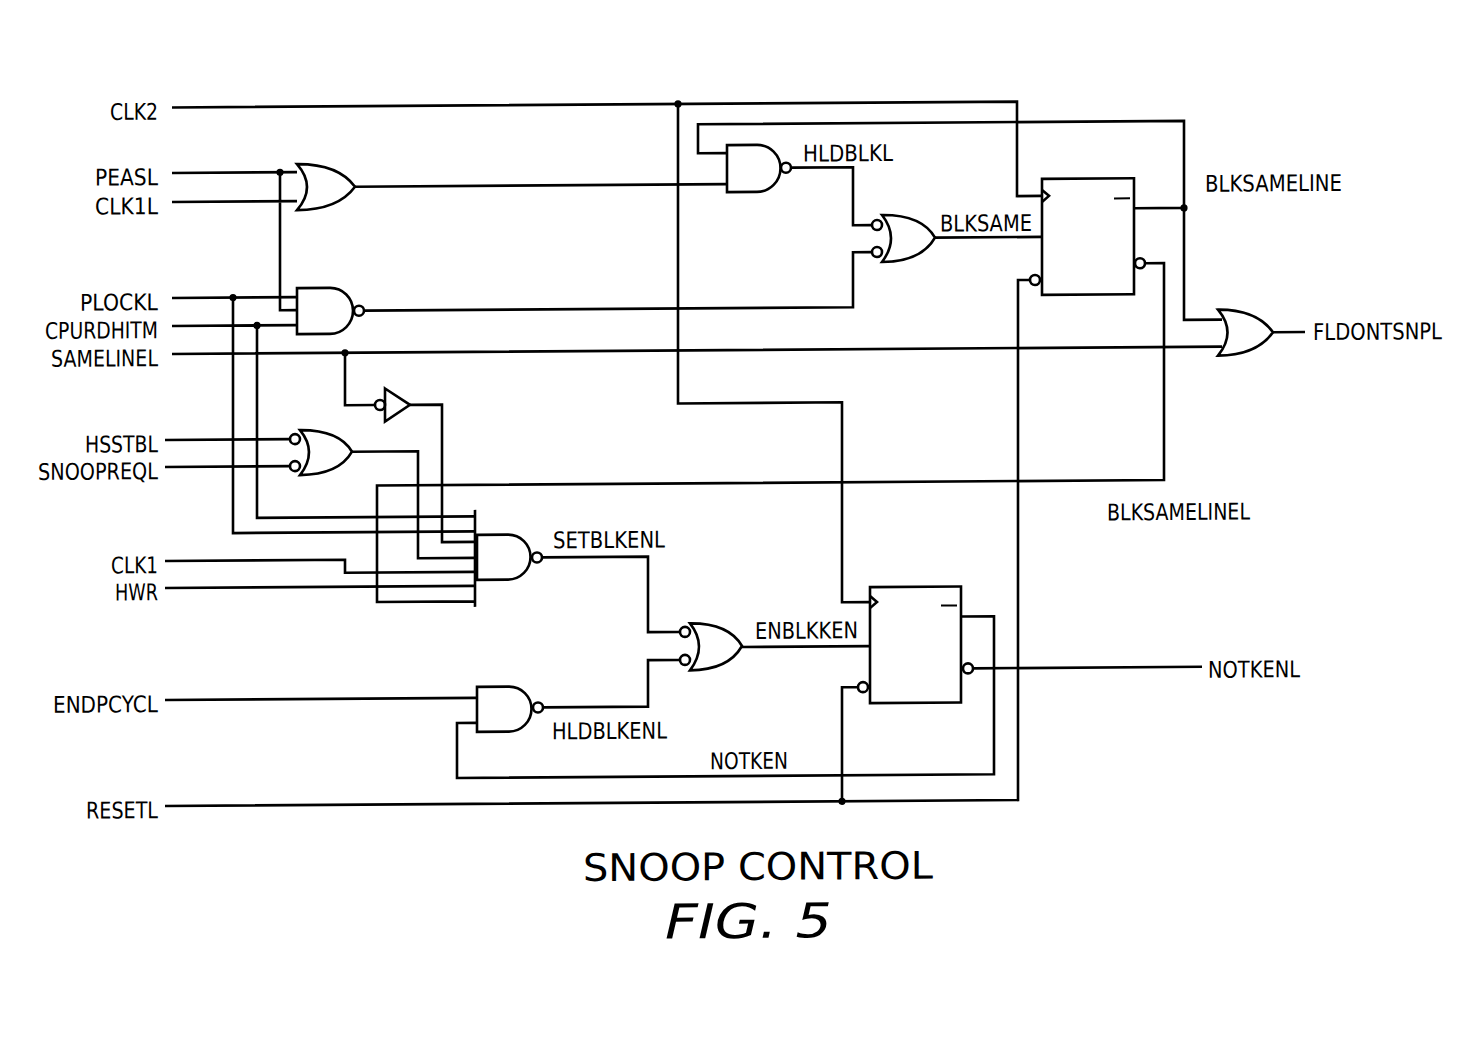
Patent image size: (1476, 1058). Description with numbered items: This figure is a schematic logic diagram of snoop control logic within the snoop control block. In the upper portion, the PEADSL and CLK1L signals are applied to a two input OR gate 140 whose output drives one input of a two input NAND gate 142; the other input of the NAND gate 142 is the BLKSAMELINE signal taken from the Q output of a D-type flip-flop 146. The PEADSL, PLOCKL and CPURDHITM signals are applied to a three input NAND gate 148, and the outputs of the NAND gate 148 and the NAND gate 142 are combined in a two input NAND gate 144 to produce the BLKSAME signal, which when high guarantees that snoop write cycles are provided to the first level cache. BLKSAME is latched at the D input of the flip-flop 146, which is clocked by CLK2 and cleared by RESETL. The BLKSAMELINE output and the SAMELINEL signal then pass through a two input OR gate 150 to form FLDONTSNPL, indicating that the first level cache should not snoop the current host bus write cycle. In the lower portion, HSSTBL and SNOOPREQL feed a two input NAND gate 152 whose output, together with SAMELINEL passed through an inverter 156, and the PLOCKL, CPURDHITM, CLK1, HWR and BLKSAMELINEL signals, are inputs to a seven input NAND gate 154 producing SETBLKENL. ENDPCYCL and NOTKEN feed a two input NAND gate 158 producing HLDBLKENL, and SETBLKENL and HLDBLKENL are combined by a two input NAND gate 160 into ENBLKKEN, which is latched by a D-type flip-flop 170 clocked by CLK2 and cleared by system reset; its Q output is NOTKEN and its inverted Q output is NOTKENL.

The two input OR gate 140 is at (318, 162).
The two input NAND gate 142 is at (752, 193).
The two input NAND gate 144 is at (897, 217).
The D-type flip-flop 146 is at (1082, 182).
The three input NAND gate 148 is at (322, 286).
The two input OR gate 150 is at (1232, 314).
The two input NAND gate 152 is at (314, 428).
The 7 input NAND gate 154 is at (500, 579).
The inverter 156 is at (405, 394).
The two input NAND gate 158 is at (507, 686).
The two input NAND gate 160 is at (705, 624).
The D-type flip-flop 170 is at (925, 589).